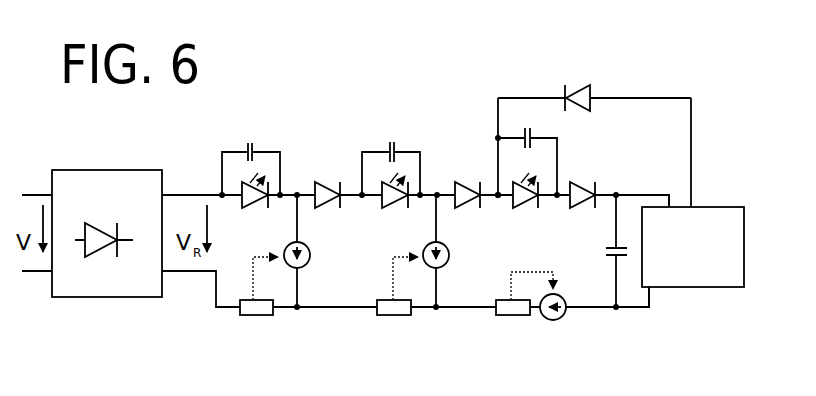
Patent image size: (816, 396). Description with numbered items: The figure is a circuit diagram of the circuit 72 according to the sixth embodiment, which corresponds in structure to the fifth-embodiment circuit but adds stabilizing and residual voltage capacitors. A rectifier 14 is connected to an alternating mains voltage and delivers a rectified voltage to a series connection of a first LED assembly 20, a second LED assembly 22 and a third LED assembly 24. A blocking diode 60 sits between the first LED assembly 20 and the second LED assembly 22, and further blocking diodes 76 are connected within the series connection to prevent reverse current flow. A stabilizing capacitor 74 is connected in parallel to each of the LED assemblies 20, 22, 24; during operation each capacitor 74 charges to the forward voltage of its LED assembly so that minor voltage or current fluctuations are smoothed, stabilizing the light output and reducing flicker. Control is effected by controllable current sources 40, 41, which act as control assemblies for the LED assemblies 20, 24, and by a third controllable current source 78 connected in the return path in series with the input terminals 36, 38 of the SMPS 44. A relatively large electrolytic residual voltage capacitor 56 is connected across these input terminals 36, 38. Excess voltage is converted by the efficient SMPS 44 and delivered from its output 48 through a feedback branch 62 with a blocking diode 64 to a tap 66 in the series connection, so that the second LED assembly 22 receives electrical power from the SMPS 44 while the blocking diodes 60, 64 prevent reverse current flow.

The rectifier 14 is at (108, 170).
The first LED assembly 20 is at (392, 208).
The second LED assembly 22 is at (522, 208).
The third LED assembly 24 is at (250, 208).
The input terminal 36 is at (667, 195).
The input terminal 38 is at (647, 288).
The controllable current source 40 is at (307, 262).
The controllable current source 41 is at (447, 262).
The SMPS 44 is at (693, 247).
The output 48 is at (692, 167).
The residual voltage capacitor 56 is at (611, 258).
The blocking diode 60 is at (466, 208).
The feedback branch 62 is at (663, 98).
The blocking diode 64 is at (565, 86).
The tap 66 is at (496, 192).
The circuit 72 is at (381, 116).
The stabilizing capacitor 74 is at (250, 143).
The blocking diode 76 is at (327, 208).
The third controllable current source 78 is at (548, 321).